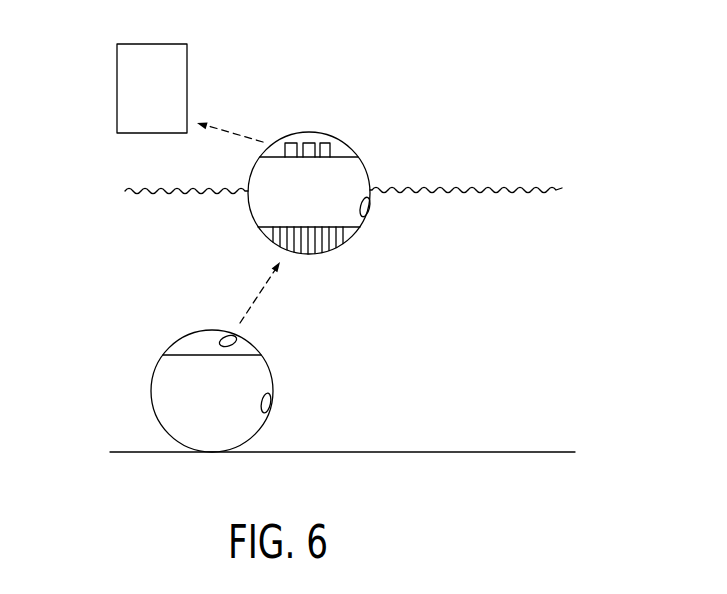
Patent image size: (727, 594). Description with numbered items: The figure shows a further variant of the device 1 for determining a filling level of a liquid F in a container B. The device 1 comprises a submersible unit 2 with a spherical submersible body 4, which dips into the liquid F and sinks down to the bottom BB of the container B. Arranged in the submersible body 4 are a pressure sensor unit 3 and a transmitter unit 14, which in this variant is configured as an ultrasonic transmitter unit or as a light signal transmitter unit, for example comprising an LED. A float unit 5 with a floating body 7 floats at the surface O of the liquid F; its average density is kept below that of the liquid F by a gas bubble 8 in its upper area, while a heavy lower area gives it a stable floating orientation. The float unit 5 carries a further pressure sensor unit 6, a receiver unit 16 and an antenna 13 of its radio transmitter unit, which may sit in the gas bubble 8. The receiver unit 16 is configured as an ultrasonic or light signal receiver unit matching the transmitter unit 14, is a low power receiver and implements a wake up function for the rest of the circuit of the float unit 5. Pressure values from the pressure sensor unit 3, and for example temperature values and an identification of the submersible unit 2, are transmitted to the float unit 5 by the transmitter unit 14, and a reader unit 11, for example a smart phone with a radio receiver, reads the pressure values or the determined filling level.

The device 1 is at (546, 307).
The submersible unit 2 is at (167, 400).
The pressure sensor unit 3 is at (277, 397).
The submersible body 4 is at (150, 385).
The float unit 5 is at (333, 215).
The further pressure sensor unit 6 is at (373, 209).
The floating body 7 is at (367, 167).
The gas bubble 8 is at (300, 131).
The reader unit 11 is at (137, 80).
The antenna 13 is at (332, 181).
The transmitter unit 14 is at (243, 340).
The receiver unit 16 is at (264, 238).
The surface O is at (527, 190).
The liquid F is at (135, 275).
The container B is at (365, 493).
The bottom BB is at (503, 452).